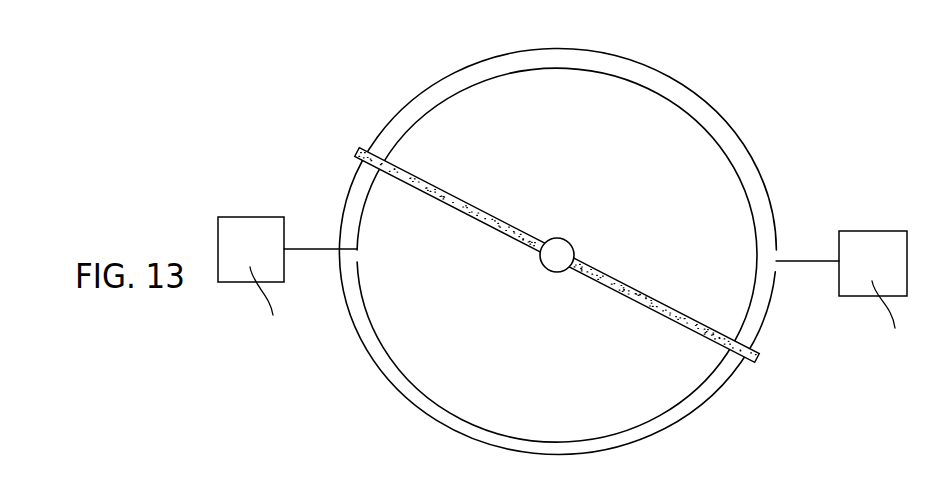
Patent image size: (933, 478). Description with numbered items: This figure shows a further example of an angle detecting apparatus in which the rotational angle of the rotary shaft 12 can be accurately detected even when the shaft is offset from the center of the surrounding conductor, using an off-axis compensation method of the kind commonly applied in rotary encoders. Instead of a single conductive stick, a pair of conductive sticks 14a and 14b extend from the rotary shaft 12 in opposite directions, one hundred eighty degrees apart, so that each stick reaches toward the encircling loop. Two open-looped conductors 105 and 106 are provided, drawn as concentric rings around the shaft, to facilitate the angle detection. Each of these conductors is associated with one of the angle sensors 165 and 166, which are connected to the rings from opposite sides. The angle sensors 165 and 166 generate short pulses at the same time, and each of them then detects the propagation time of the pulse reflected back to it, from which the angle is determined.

The rotary shaft 12 is at (567, 238).
The conductive stick 14a is at (430, 195).
The conductive stick 14b is at (653, 312).
The open-looped conductor 105 is at (448, 79).
The open-looped conductor 106 is at (685, 422).
The angle sensor 165 is at (256, 216).
The angle sensor 166 is at (876, 231).